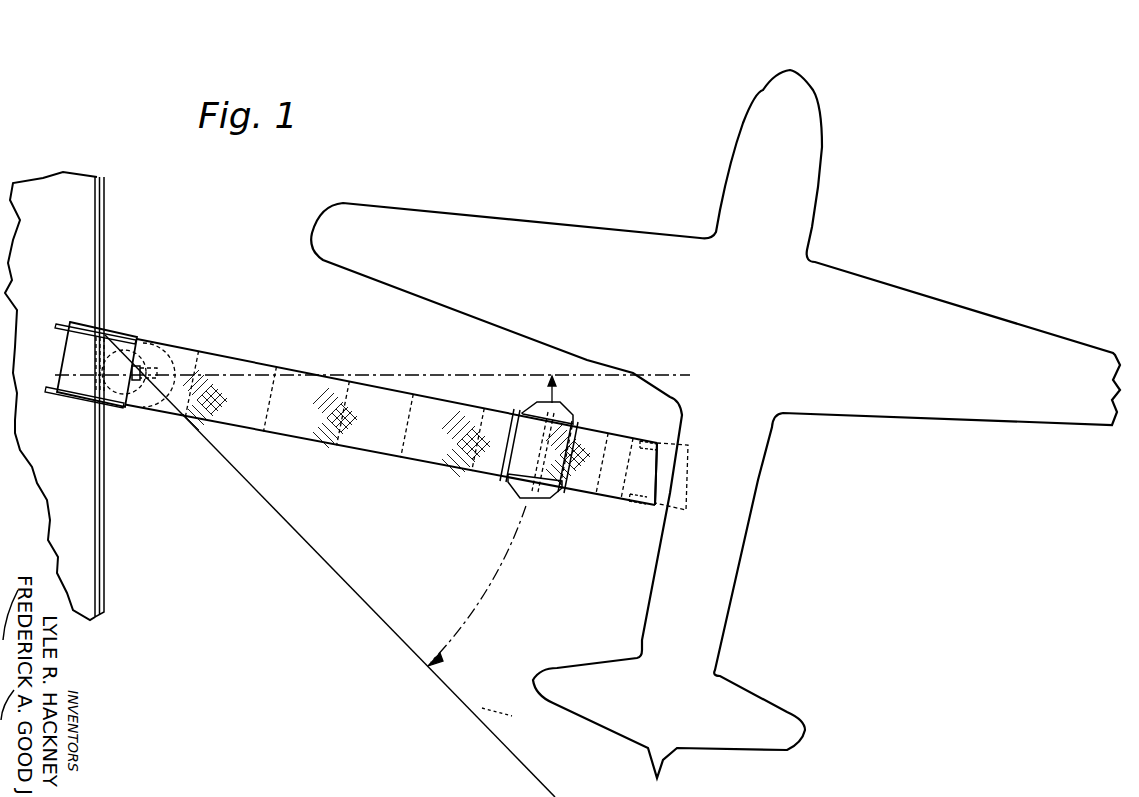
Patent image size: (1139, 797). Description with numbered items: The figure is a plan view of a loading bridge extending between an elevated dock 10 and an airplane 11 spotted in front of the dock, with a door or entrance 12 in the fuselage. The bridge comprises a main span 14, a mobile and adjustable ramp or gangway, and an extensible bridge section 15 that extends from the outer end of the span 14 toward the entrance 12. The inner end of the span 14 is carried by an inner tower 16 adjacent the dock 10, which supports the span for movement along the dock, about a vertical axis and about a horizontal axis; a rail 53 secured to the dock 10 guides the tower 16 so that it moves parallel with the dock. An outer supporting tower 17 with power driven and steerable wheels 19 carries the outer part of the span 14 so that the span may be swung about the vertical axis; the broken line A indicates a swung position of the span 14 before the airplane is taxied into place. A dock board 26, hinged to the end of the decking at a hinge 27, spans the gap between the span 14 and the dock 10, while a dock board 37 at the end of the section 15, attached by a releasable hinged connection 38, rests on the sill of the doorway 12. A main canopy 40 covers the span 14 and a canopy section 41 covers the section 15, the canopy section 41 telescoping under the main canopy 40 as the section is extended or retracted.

The elevated dock 10 is at (74, 233).
The airplane 11 is at (574, 226).
The door or entrance 12 is at (653, 503).
The main span 14 is at (254, 357).
The bridge section 15 is at (598, 500).
The inner tower 16 is at (165, 392).
The outer supporting tower 17 is at (505, 493).
The wheels 19 is at (532, 490).
The dock board 26 is at (73, 357).
The hinge 27 is at (140, 346).
The dock board 37 is at (669, 447).
The hinged mounting or connection 38 is at (657, 462).
The main canopy 40 is at (318, 418).
The canopy section 41 is at (626, 480).
The rail 53 is at (101, 541).
The broken line A is at (330, 566).